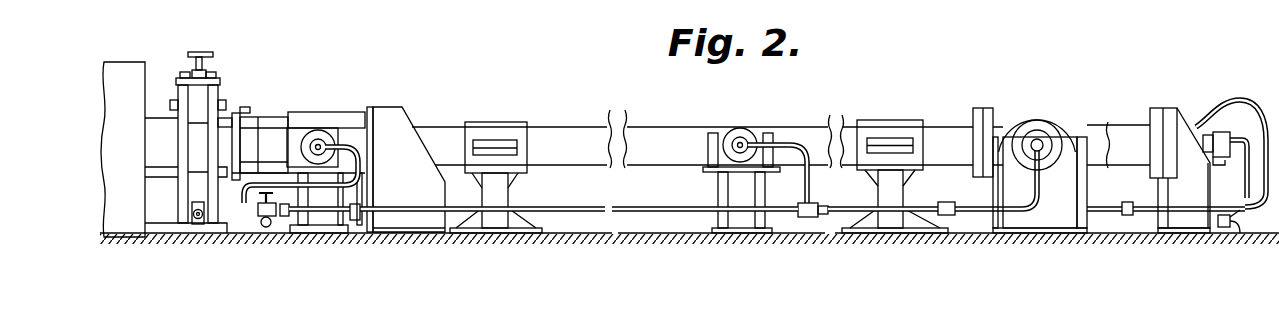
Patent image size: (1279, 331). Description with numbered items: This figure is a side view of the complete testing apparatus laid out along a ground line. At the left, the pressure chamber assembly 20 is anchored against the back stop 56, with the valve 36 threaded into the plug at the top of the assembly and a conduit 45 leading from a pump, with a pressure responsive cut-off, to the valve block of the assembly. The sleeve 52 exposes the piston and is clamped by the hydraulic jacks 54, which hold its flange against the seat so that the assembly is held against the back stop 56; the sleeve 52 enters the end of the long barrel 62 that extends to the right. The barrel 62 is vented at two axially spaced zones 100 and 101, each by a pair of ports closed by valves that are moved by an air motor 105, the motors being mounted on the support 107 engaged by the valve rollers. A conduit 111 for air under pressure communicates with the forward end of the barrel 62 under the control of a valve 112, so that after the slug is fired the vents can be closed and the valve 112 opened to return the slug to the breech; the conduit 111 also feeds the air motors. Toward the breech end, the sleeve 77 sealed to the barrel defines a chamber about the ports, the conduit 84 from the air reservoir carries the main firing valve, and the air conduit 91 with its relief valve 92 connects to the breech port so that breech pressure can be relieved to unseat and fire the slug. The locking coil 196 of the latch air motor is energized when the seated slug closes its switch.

The valve 36 is at (201, 52).
The pressure chamber assembly 20 is at (229, 92).
The sleeve 52 is at (271, 125).
The hydraulic jacks 54 is at (303, 115).
The vent zone 101 is at (348, 116).
The barrel 62 is at (707, 127).
The air motor 105 is at (740, 128).
The vent zone 100 is at (752, 161).
The support 107 is at (712, 172).
The conduit 111 is at (656, 213).
The conduit 84 is at (1045, 127).
The sleeve 77 is at (1096, 124).
The air conduit 91 is at (1225, 107).
The locking coil 196 is at (1227, 133).
The valve 92 is at (1241, 235).
The back stop 56 is at (133, 220).
The conduit 45 is at (200, 226).
The valve 112 is at (258, 220).